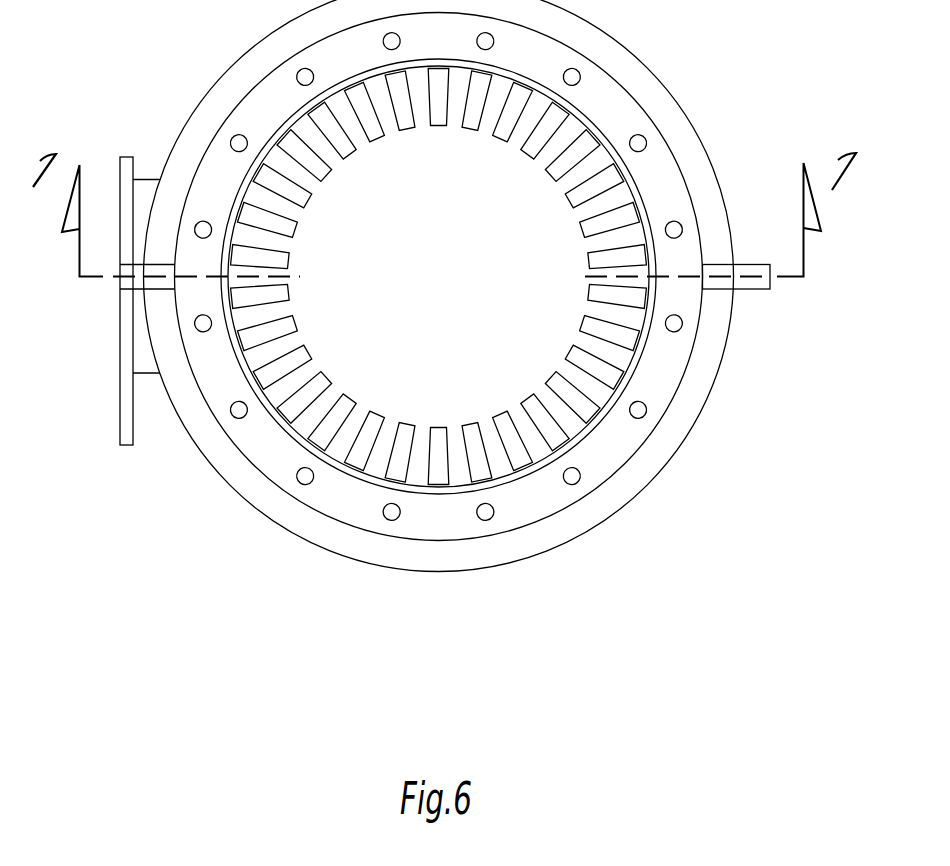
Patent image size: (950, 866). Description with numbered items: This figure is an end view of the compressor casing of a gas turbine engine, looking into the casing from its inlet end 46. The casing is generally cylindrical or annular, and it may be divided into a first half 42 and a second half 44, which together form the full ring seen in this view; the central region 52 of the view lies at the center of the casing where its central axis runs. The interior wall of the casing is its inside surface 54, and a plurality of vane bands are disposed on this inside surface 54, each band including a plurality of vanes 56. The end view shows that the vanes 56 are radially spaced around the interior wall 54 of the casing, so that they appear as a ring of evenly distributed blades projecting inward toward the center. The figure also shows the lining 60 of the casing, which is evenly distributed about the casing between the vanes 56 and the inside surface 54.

The first half 42 is at (677, 100).
The second half 44 is at (637, 495).
The inlet end 46 is at (315, 53).
The central opening 52 is at (444, 290).
The inside surface 54 is at (350, 470).
The vanes 56 is at (402, 427).
The lining 60 is at (318, 405).